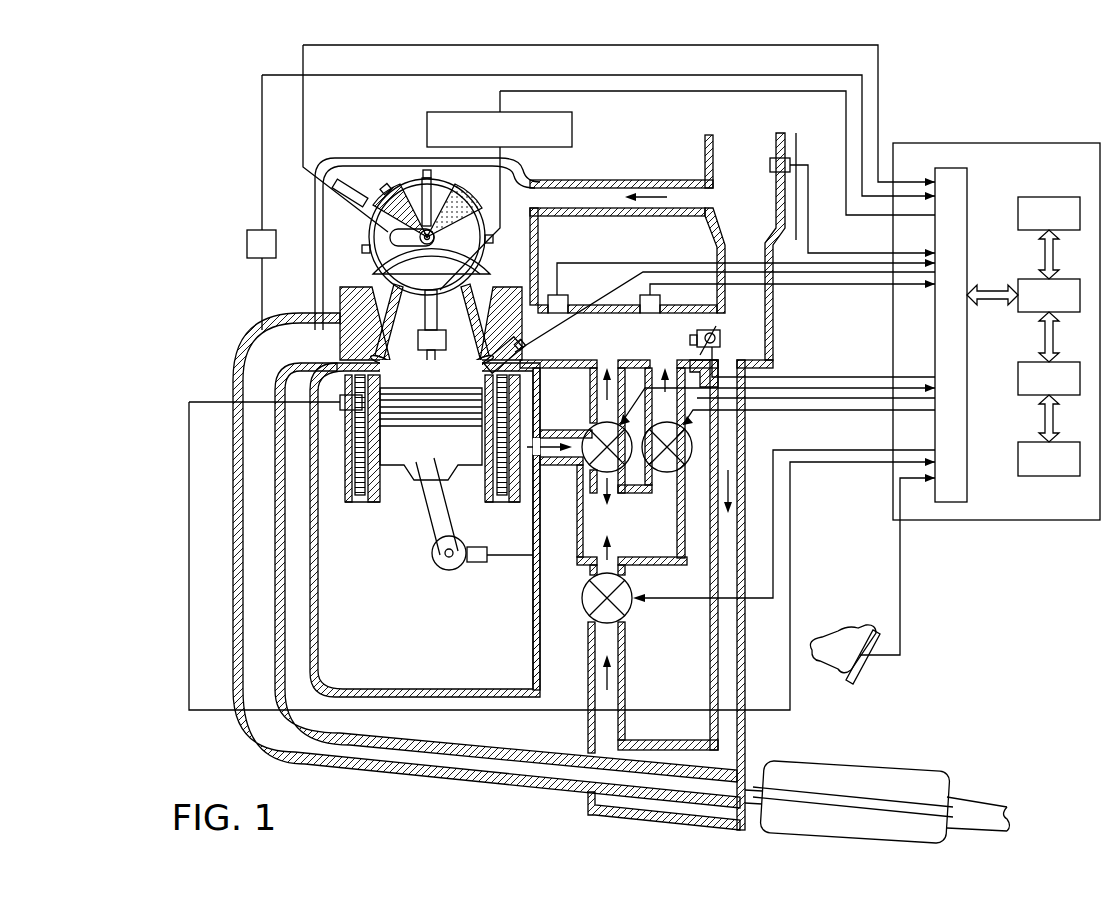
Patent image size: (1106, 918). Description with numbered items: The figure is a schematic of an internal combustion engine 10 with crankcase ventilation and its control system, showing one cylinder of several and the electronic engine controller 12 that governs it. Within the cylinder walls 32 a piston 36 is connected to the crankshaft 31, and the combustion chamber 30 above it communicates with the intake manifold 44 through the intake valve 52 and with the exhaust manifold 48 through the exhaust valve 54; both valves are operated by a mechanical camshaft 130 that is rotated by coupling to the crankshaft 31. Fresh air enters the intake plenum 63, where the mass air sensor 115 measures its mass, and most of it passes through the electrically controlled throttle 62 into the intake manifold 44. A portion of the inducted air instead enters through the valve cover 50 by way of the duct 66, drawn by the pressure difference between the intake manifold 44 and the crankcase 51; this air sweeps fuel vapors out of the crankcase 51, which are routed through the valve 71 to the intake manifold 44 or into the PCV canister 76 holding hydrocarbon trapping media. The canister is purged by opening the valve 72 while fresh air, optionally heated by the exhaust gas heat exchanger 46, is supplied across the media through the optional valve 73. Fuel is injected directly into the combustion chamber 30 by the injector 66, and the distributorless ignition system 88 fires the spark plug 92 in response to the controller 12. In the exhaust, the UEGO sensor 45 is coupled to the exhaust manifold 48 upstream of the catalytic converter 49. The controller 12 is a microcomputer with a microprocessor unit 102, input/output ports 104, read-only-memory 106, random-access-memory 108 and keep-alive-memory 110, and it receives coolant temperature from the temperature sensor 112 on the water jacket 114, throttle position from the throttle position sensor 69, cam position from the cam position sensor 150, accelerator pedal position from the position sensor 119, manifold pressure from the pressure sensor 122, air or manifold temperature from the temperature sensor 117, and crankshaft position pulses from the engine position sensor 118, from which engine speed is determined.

The internal combustion engine 10 is at (315, 298).
The electronic engine controller 12 is at (980, 143).
The combustion chamber 30 is at (430, 375).
The crankshaft 31 is at (432, 560).
The cylinder walls 32 is at (374, 502).
The piston 36 is at (438, 462).
The intake manifold 44 is at (646, 578).
The UEGO sensor 45 is at (247, 250).
The exhaust gas heat exchanger 46 is at (588, 808).
The exhaust manifold 48 is at (247, 372).
The catalytic converter 49 is at (912, 775).
The valve cover 50 is at (325, 252).
The crankcase 51 is at (425, 528).
The intake valve 52 is at (491, 325).
The exhaust valve 54 is at (388, 345).
The electrically controlled throttle 62 is at (720, 332).
The intake plenum 63 is at (786, 141).
The duct 66 is at (617, 218).
The throttle position sensor 69 is at (690, 352).
The valve 71 is at (585, 425).
The valve 72 is at (690, 465).
The optional valve 73 is at (582, 602).
The PCV canister 76 is at (578, 532).
The distributorless ignition system 88 is at (574, 128).
The spark plug 92 is at (428, 300).
The microprocessor unit 102 is at (1018, 279).
The input/output ports 104 is at (970, 192).
The read-only-memory 106 is at (1043, 197).
The random-access-memory 108 is at (1018, 362).
The keep-alive-memory 110 is at (1018, 442).
The temperature sensor 112 is at (345, 410).
The water jacket 114 is at (362, 502).
The mass air sensor 115 is at (770, 165).
The temperature sensor 117 is at (660, 300).
The engine position sensor 118 is at (480, 562).
The position sensor 119 is at (865, 672).
The pressure sensor 122 is at (560, 295).
The mechanical camshaft 130 is at (392, 238).
The cam position sensor 150 is at (355, 182).